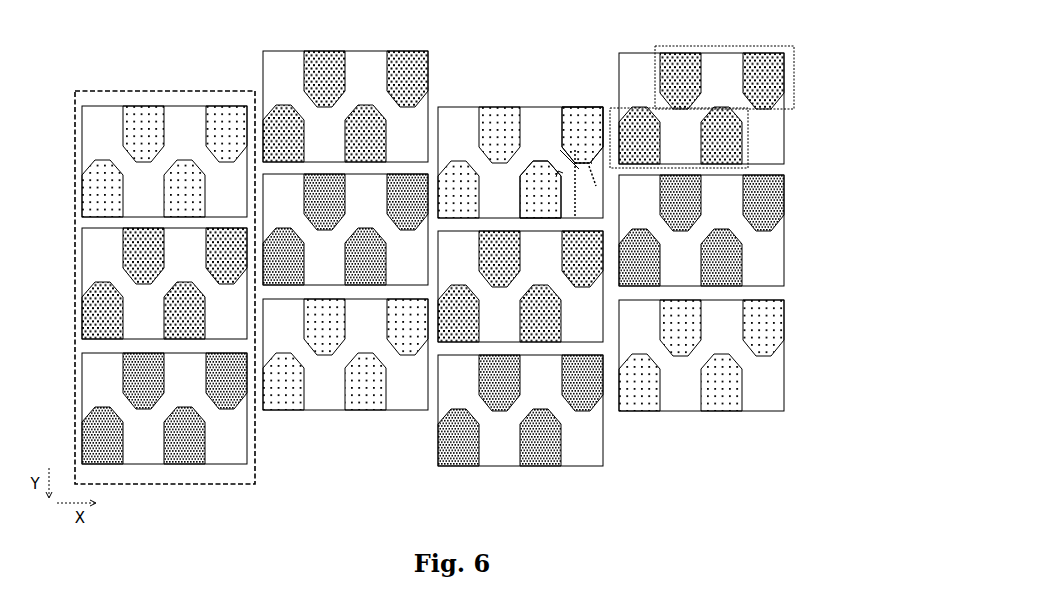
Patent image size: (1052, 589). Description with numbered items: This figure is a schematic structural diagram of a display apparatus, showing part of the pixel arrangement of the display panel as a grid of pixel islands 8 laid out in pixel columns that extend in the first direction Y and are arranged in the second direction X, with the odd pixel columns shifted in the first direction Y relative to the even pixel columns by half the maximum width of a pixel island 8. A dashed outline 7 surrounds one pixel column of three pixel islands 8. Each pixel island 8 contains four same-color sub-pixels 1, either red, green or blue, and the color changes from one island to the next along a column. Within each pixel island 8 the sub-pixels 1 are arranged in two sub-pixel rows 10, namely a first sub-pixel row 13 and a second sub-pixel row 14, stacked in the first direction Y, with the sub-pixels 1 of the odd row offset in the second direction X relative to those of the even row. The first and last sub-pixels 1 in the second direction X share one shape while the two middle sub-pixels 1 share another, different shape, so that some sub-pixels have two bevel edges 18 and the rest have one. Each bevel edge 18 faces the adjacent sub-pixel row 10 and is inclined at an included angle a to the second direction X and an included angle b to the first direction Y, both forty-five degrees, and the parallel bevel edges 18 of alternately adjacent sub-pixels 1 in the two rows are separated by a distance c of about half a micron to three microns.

The sub-pixel 1 is at (320, 62).
The pixel unit region 7 is at (165, 263).
The pixel island 8 is at (182, 105).
The bevel edge 18 is at (557, 172).
The sub-pixel row 10 is at (746, 107).
The first sub-pixel row 13 is at (794, 77).
The second sub-pixel row 14 is at (748, 138).
The included angle a is at (589, 173).
The included angle b is at (584, 184).
The distance c is at (566, 163).